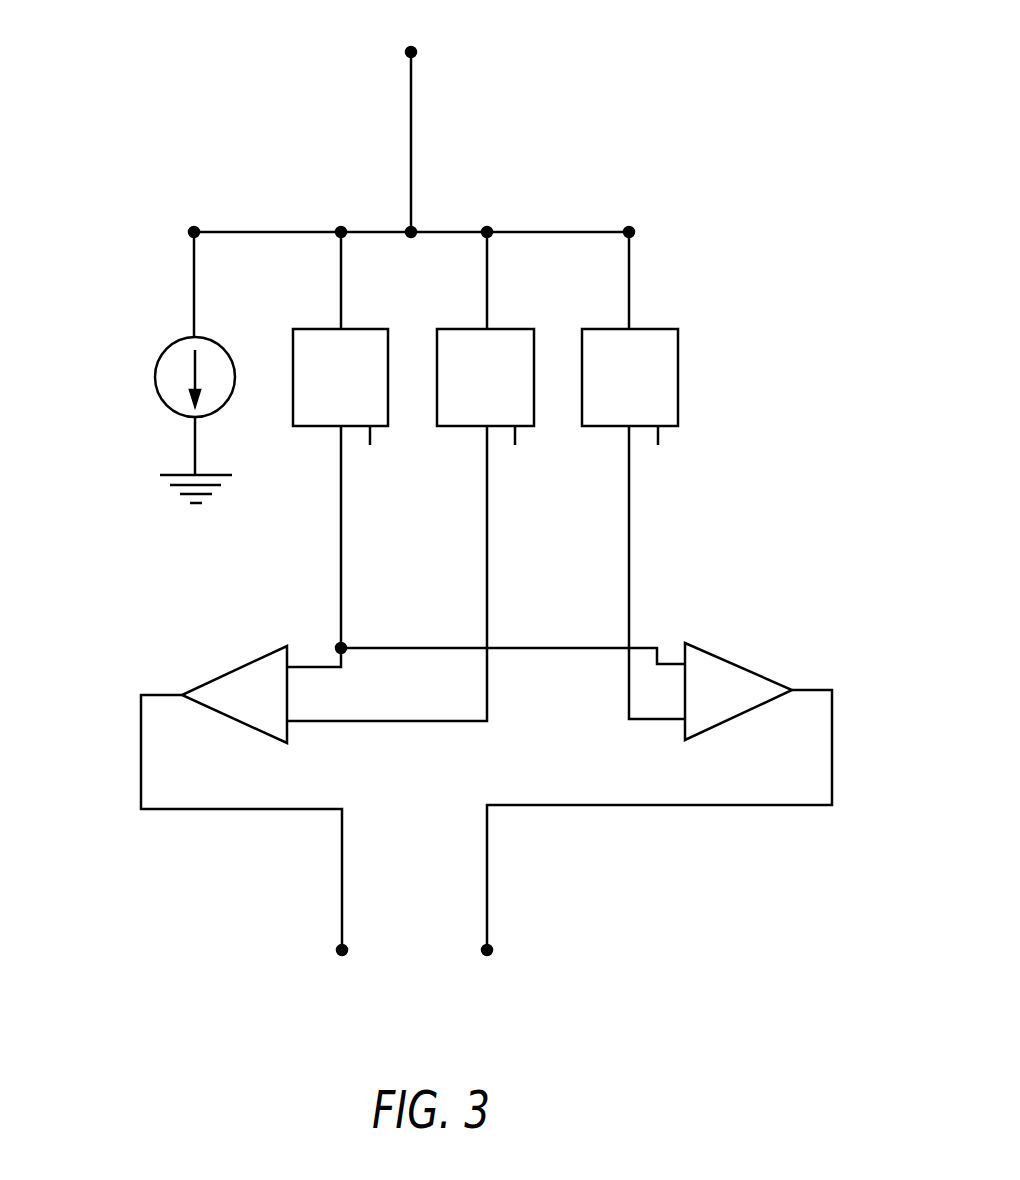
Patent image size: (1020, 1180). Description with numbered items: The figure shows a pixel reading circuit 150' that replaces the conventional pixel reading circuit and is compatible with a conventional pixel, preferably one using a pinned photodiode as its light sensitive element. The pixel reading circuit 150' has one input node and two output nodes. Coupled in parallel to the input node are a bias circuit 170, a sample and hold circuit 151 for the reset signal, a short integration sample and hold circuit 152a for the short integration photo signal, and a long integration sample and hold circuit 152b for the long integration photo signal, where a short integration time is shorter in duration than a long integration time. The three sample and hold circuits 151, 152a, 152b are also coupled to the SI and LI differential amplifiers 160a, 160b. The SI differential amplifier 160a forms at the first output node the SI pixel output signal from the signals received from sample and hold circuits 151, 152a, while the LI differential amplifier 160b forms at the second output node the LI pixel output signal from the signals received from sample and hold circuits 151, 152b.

The pixel reading circuit 150' is at (486, 527).
The bias circuit 170 is at (155, 377).
The sample and hold circuit 151 is at (362, 413).
The short integration sample and hold circuit 152a is at (513, 413).
The long integration sample and hold circuit 152b is at (657, 413).
The SI differential amplifier 160a is at (278, 707).
The LI differential amplifier 160b is at (748, 705).